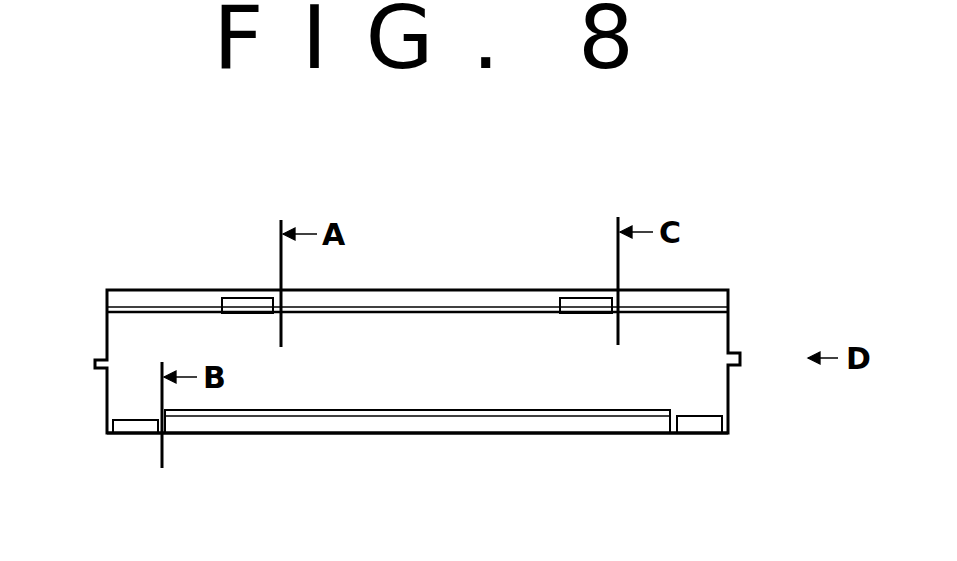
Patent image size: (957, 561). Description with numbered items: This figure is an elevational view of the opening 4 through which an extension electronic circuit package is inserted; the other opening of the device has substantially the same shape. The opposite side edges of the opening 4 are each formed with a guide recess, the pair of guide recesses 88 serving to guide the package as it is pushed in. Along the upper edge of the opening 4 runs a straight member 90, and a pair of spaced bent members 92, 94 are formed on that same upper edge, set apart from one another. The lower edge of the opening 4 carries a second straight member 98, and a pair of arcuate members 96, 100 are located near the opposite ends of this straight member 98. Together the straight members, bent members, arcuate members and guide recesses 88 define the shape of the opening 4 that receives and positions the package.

The opening 4 is at (614, 393).
The guide recesses 88 is at (100, 359).
The straight member 90 is at (166, 305).
The bent member 92 is at (246, 297).
The bent member 94 is at (583, 297).
The arcuate member 96 is at (128, 426).
The straight member 98 is at (508, 412).
The arcuate member 100 is at (698, 423).